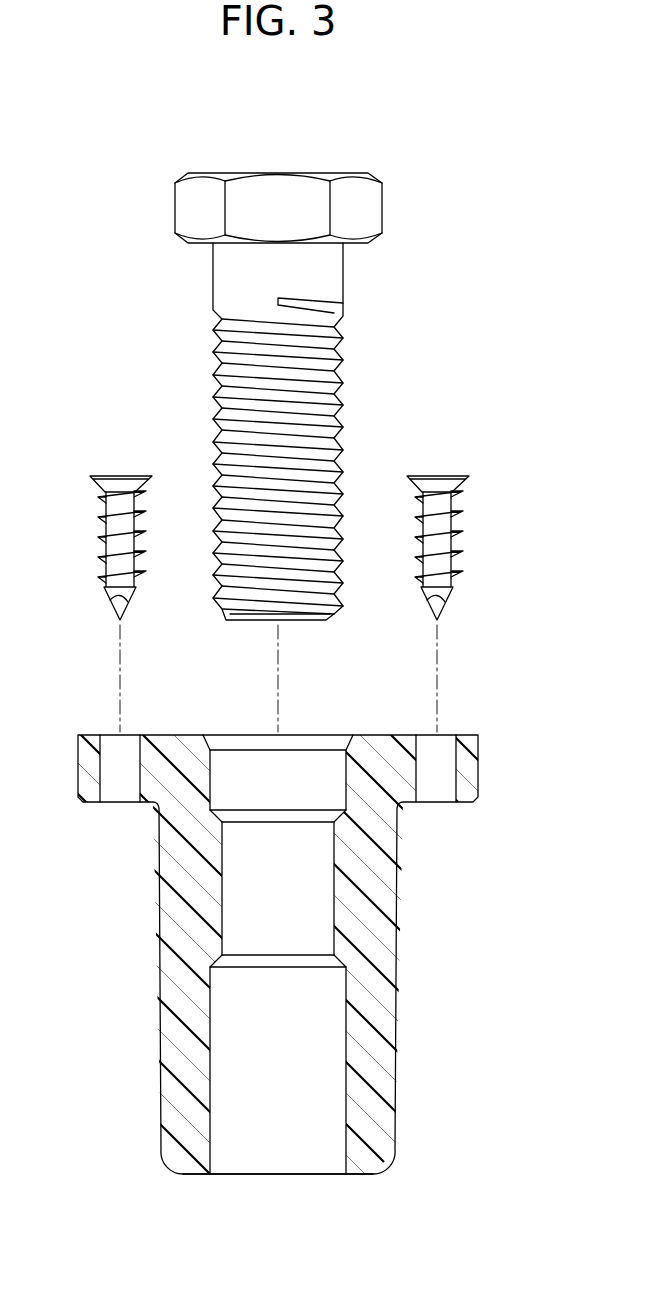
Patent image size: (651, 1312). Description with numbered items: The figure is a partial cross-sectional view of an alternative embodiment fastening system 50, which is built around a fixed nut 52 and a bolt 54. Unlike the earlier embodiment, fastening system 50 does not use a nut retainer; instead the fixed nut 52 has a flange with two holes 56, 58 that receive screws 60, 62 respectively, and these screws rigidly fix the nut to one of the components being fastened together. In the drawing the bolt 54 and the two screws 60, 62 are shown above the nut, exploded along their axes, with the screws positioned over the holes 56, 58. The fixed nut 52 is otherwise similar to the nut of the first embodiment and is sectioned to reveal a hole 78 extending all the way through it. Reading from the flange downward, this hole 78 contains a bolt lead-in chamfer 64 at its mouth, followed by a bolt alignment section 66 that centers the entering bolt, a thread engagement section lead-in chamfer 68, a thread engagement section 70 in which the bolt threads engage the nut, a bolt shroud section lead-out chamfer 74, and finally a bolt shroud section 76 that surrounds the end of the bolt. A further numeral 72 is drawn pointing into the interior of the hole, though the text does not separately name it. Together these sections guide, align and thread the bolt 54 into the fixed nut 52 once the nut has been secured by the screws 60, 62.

The fastening system 50 is at (325, 716).
The fixed nut 52 is at (325, 978).
The bolt 54 is at (343, 328).
The hole 56 is at (113, 752).
The hole 58 is at (443, 752).
The screw 60 is at (105, 514).
The screw 62 is at (452, 507).
The bolt lead-in chamfer 64 is at (207, 745).
The bolt alignment section 66 is at (343, 767).
The thread engagement section lead-in chamfer 68 is at (338, 818).
The thread engagement section 70 is at (334, 862).
The central bore 72 is at (278, 893).
The bolt shroud section lead-out chamfer 74 is at (340, 957).
The bolt shroud section 76 is at (348, 1117).
The hole 78 is at (205, 1200).